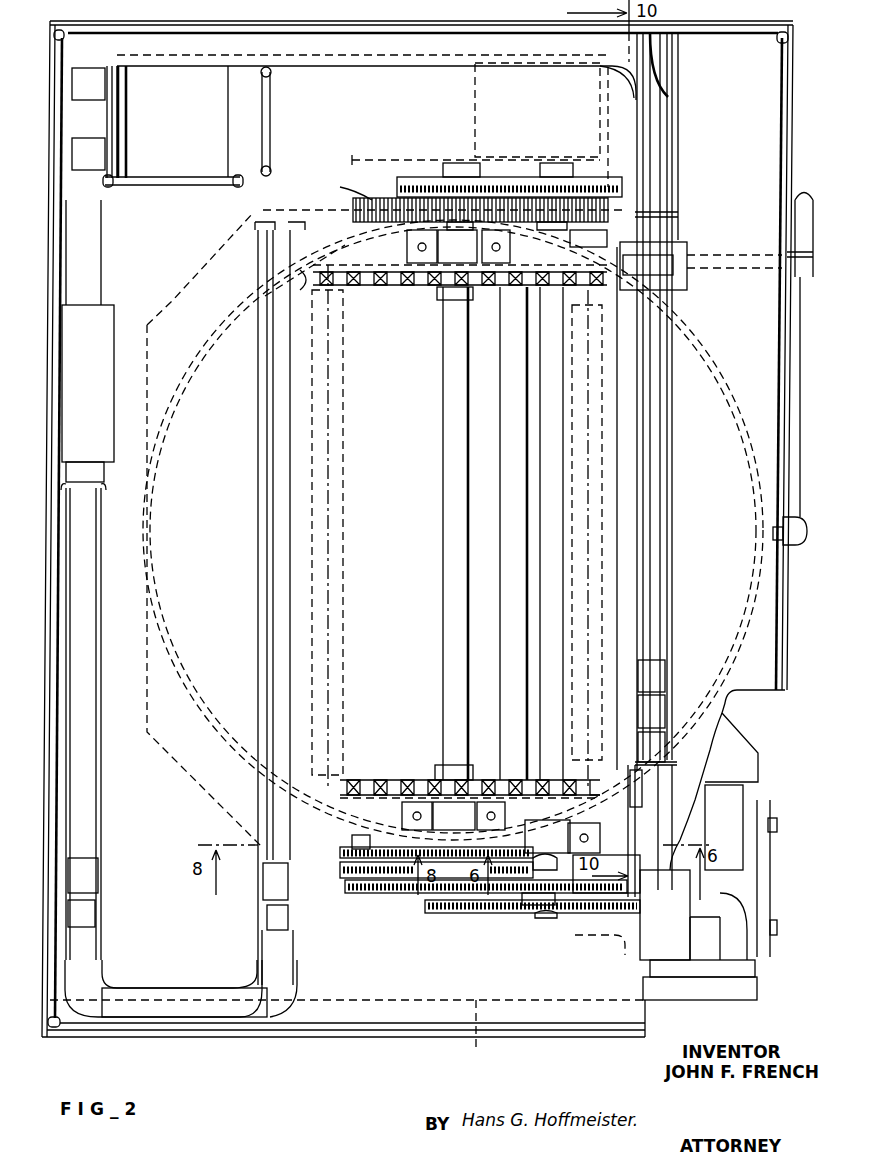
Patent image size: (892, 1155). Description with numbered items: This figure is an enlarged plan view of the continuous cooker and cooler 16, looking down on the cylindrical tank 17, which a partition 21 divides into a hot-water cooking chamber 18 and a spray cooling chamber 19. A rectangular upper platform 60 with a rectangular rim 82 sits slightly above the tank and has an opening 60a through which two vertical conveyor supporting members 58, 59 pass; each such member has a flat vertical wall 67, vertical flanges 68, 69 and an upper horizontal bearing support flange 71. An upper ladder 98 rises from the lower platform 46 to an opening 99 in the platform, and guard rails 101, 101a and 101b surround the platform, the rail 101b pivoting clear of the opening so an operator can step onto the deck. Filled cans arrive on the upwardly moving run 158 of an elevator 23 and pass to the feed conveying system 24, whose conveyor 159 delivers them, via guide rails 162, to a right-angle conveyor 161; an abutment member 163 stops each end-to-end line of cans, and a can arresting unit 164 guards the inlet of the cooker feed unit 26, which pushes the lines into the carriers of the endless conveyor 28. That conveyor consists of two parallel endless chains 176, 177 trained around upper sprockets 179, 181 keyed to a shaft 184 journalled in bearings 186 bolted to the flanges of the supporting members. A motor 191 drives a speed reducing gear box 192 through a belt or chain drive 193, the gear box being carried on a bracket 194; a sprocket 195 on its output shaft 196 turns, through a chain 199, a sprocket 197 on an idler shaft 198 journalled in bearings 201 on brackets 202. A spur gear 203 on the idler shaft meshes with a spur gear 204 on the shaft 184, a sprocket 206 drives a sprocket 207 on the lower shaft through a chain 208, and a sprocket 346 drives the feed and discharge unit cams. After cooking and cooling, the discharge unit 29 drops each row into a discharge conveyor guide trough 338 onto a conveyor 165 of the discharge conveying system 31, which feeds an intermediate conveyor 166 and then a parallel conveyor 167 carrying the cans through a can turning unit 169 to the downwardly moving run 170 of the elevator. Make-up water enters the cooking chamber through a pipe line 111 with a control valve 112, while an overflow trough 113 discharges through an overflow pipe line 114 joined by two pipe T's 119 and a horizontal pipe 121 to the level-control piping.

The continuous cooker and cooler 16 is at (428, 1040).
The tank 17 is at (233, 748).
The cooking chamber 18 is at (700, 315).
The cooling chamber 19 is at (172, 672).
The partition 21 is at (512, 566).
The elevator 23 is at (103, 112).
The feed conveying system 24 is at (345, 70).
The cooker feed unit 26 is at (648, 447).
The endless conveyor 28 is at (352, 595).
The discharge unit 29 is at (252, 530).
The discharge conveying system 31 is at (88, 597).
The lower platform 46 is at (478, 1052).
The conveyor supporting member 58 is at (300, 252).
The conveyor supporting member 59 is at (300, 807).
The upper platform 60 is at (241, 626).
The opening 60a is at (300, 285).
The vertical wall 67 is at (382, 790).
The vertical flange 68 is at (340, 800).
The vertical flange 69 is at (735, 795).
The bearing support flange 71 is at (358, 810).
The rectangular rim 82 is at (258, 1040).
The upper ladder 98 is at (127, 120).
The opening 99 is at (145, 175).
The guard rail 101 is at (390, 12).
The guard rail 101a is at (207, 185).
The guard rail 101b is at (270, 120).
The pipe line 111 is at (712, 250).
The control valve 112 is at (680, 235).
The overflow trough 113 is at (732, 560).
The overflow pipe line 114 is at (763, 545).
The pipe T 119 is at (800, 275).
The horizontal pipe 121 is at (797, 476).
The upwardly moving run 158 is at (105, 88).
The conveyor 159 is at (425, 60).
The conveyor 161 is at (655, 138).
The guide rails 162 is at (668, 97).
The abutment member 163 is at (650, 763).
The can arresting unit 164 is at (681, 229).
The conveyor 165 is at (275, 584).
The intermediate conveyor 166 is at (200, 968).
The conveyor 167 is at (88, 767).
The can turning unit 169 is at (88, 341).
The downwardly moving run 170 is at (105, 142).
The endless chain 176 is at (388, 292).
The endless chain 177 is at (392, 778).
The upper sprocket 179 is at (400, 292).
The upper sprocket 181 is at (402, 775).
The shaft 184 is at (452, 418).
The bearing 186 is at (456, 530).
The motor 191 is at (757, 975).
The speed reducing gear box 192 is at (737, 800).
The belt or chain drive 193 is at (750, 950).
The bracket 194 is at (745, 745).
The sprocket 195 is at (715, 905).
The output shaft 196 is at (658, 920).
The sprocket 197 is at (505, 913).
The idler shaft 198 is at (548, 160).
The chain 199 is at (440, 913).
The bearing 201 is at (572, 235).
The bracket 202 is at (570, 818).
The spur gear 203 is at (608, 210).
The spur gear 204 is at (453, 199).
The sprocket 206 is at (528, 185).
The sprocket 207 is at (425, 185).
The chain 208 is at (508, 185).
The discharge conveyor guide trough 338 is at (275, 603).
The sprocket 346 is at (565, 913).